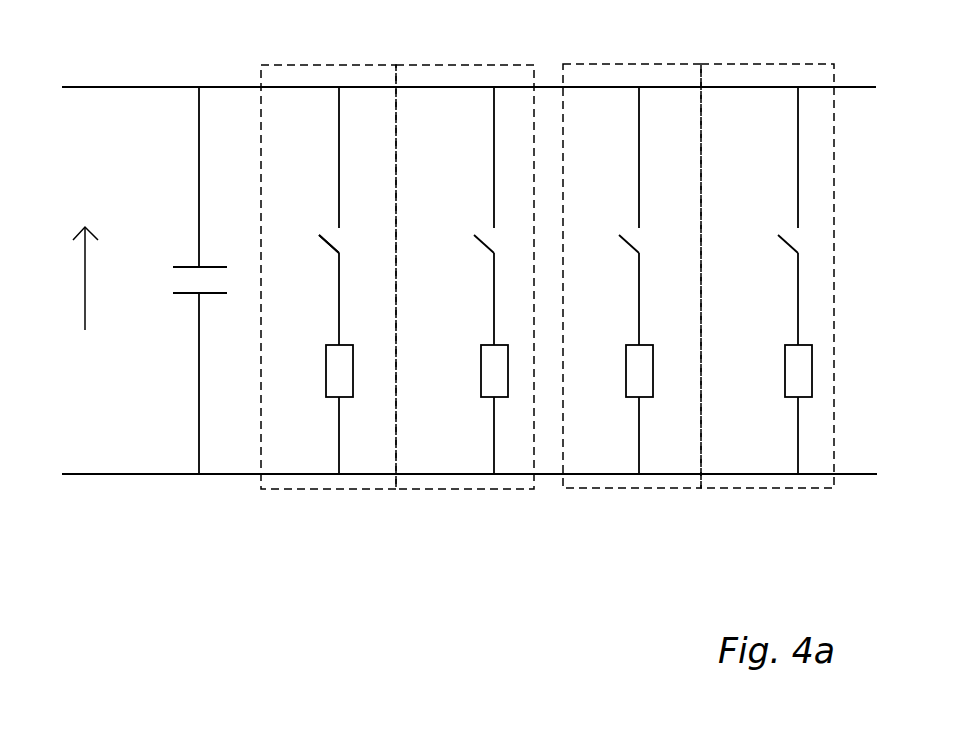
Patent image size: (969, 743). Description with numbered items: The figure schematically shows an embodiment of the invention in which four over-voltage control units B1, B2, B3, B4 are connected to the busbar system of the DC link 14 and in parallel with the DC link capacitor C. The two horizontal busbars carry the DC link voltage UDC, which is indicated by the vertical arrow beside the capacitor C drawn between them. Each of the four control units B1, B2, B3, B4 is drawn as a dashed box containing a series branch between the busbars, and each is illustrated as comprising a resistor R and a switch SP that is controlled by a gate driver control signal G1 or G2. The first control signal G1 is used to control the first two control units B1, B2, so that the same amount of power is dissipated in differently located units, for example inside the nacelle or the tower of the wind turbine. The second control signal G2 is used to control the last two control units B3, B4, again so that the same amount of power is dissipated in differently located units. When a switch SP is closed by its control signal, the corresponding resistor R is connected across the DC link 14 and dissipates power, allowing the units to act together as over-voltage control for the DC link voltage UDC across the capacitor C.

The DC link capacitor C is at (187, 266).
The DC link voltage UDC is at (111, 278).
The resistor R is at (326, 377).
The switch SP is at (342, 252).
The first gate driver control signal G1 is at (330, 245).
The second gate driver control signal G2 is at (630, 245).
The first over-voltage control unit B1 is at (328, 303).
The second over-voltage control unit B2 is at (465, 303).
The third over-voltage control unit B3 is at (632, 303).
The fourth over-voltage control unit B4 is at (767, 303).
The DC link 14 is at (450, 577).